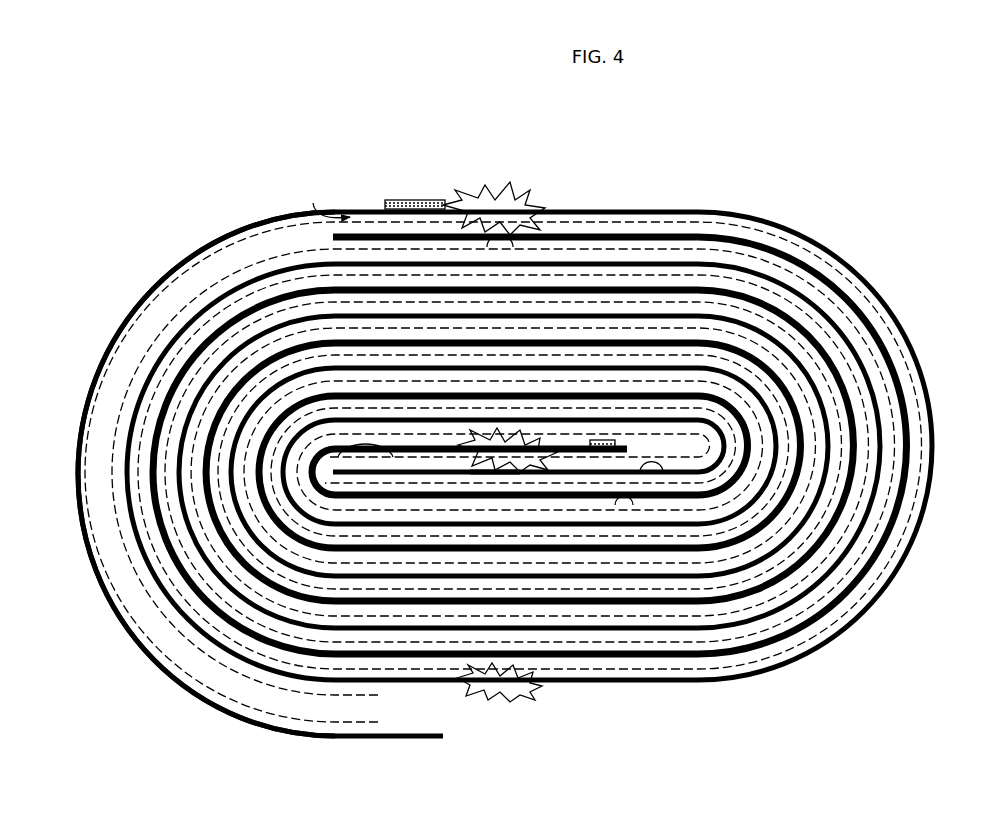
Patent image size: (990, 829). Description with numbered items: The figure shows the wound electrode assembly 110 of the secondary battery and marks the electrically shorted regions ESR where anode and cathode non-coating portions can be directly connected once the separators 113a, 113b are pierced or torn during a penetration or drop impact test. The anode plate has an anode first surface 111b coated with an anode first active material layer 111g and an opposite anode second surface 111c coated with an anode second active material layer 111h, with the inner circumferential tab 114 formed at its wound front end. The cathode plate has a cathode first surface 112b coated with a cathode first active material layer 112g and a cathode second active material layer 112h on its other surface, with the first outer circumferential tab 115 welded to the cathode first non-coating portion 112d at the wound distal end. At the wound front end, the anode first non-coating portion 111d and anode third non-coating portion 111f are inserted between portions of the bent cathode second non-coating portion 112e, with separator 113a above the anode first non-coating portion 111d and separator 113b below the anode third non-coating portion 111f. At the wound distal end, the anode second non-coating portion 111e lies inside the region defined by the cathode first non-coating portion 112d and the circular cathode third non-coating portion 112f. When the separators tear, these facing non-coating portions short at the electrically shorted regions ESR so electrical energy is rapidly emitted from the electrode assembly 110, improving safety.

The electrode assembly 110 is at (906, 196).
The anode first surface 111b is at (338, 445).
The anode second surface 111c is at (407, 450).
The anode first non-coating portion 111d is at (552, 475).
The anode second non-coating portion 111e is at (547, 233).
The anode third non-coating portion 111f is at (478, 460).
The anode first active material layer 111g is at (581, 500).
The anode second active material layer 111h is at (500, 238).
The cathode first surface 112b is at (757, 230).
The cathode first non-coating portion 112d is at (368, 207).
The cathode second non-coating portion 112e is at (670, 476).
The cathode third non-coating portion 112f is at (313, 203).
The cathode first active material layer 112g is at (807, 278).
The cathode second active material layer 112h is at (722, 683).
The separator 113a is at (627, 432).
The separator 113b is at (637, 458).
The inner circumferential tab 114 is at (597, 438).
The first outer circumferential tab 115 is at (413, 200).
The electrically shorted region ESR is at (450, 441).